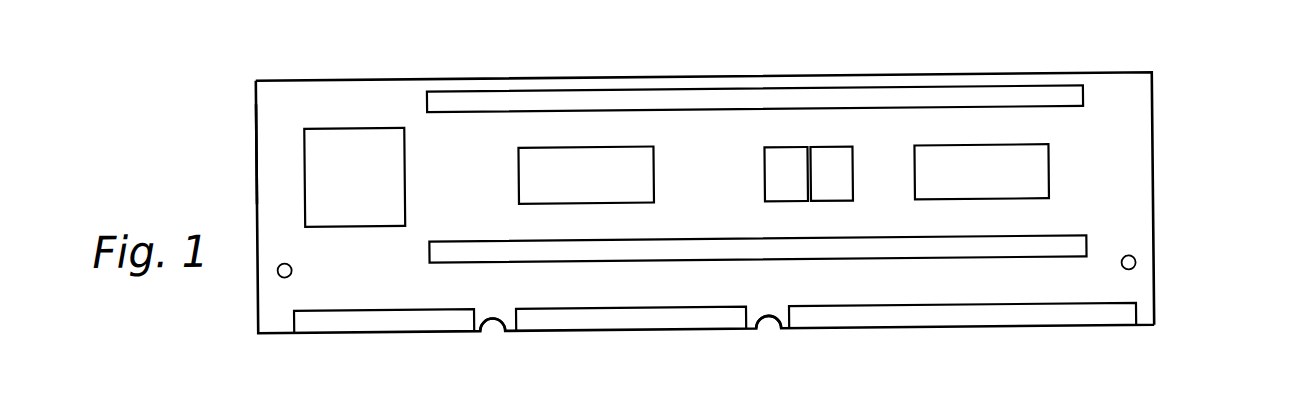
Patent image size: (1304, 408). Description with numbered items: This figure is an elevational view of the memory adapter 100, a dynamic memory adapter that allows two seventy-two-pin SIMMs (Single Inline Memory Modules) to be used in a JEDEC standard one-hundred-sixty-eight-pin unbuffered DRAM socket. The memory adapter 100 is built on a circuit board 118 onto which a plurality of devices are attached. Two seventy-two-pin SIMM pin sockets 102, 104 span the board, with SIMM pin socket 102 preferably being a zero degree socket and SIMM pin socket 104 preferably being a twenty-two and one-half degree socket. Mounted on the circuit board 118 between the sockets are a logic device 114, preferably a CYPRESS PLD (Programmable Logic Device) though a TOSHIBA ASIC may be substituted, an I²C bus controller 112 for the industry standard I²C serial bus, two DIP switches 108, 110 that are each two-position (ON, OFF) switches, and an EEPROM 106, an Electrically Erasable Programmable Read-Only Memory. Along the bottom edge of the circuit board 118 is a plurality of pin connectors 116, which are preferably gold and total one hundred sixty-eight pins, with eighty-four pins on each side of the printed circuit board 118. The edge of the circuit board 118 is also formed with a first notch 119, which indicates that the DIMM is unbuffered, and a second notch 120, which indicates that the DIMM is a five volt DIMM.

The memory adapter 100 is at (1176, 99).
The SIMM pin socket 102 is at (1060, 89).
The SIMM pin socket 104 is at (1086, 248).
The EEPROM 106 is at (1049, 175).
The DIP switch 108 is at (838, 148).
The DIP switch 110 is at (787, 148).
The I²C bus controller 112 is at (519, 173).
The logic device 114 is at (354, 125).
The pin connectors 116 is at (355, 333).
The circuit board 118 is at (257, 148).
The first notch 119 is at (490, 328).
The second notch 120 is at (764, 329).